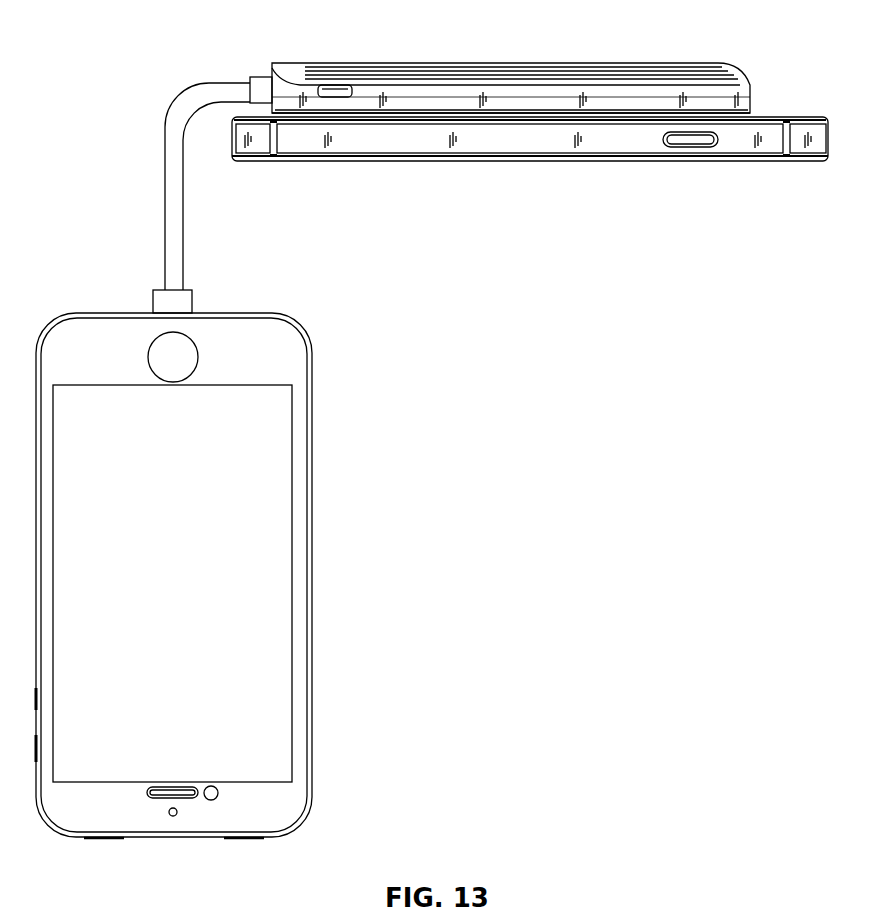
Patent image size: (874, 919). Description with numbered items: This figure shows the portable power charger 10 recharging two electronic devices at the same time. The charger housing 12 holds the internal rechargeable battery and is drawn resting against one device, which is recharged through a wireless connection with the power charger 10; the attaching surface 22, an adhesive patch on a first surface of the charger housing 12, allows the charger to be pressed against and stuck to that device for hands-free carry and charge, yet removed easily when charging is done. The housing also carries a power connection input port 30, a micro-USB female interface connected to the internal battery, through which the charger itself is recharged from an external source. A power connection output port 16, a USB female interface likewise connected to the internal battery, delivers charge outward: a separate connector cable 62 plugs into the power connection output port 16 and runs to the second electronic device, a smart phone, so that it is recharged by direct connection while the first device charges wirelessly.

The portable power charger 10 is at (534, 65).
The charger housing 12 is at (734, 72).
The attaching surface 22 is at (676, 114).
The power connection input port 30 is at (336, 85).
The power connection output port 16 is at (249, 80).
The connector cable 62 is at (172, 222).